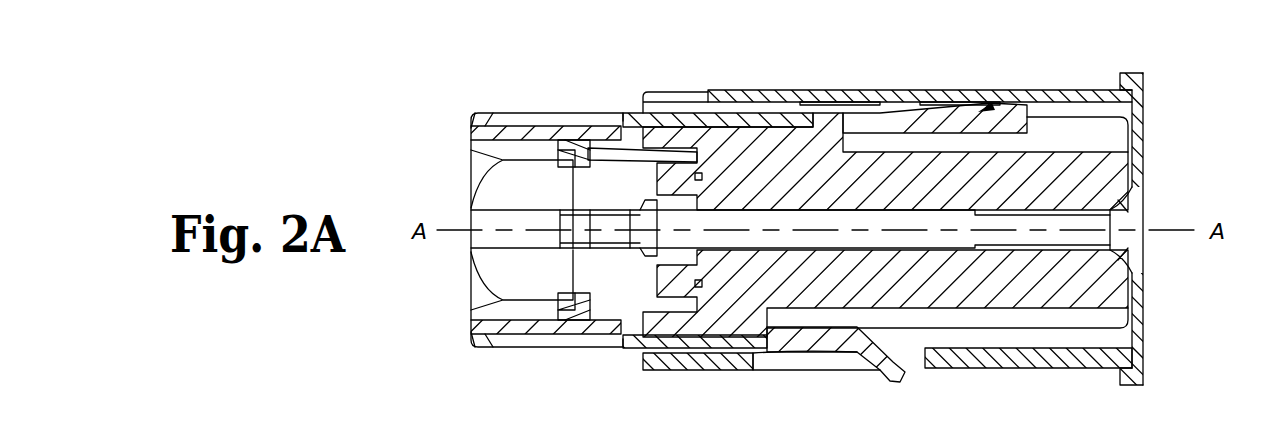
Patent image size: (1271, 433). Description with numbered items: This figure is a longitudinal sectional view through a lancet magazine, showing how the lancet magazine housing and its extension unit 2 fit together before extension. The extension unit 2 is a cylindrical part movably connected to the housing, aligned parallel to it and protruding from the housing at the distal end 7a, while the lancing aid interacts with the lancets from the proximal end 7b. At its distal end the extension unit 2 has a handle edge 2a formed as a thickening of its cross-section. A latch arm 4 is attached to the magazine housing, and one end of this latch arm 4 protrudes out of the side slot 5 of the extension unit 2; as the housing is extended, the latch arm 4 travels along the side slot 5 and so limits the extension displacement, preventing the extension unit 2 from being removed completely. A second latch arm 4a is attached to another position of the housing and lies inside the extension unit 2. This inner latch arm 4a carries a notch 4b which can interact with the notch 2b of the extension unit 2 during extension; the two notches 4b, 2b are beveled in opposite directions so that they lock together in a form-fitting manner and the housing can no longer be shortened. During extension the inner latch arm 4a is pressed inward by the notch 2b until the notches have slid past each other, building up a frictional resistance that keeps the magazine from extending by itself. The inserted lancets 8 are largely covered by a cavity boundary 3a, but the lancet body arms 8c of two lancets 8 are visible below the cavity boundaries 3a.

The extension unit 2 is at (1095, 92).
The handle edge 2a is at (1134, 74).
The notch of the extension unit 2b is at (875, 106).
The cavity boundary 3a is at (1046, 312).
The latch arm 4 is at (908, 382).
The inner latch arm 4a is at (946, 120).
The notch on latch arm 4b is at (990, 103).
The side slot 5 is at (847, 356).
The distal end of lancet magazine 7a is at (1072, 195).
The proximal end of lancet magazine 7b is at (436, 182).
The lancet 8 is at (695, 177).
The lancet body arm 8c is at (578, 146).